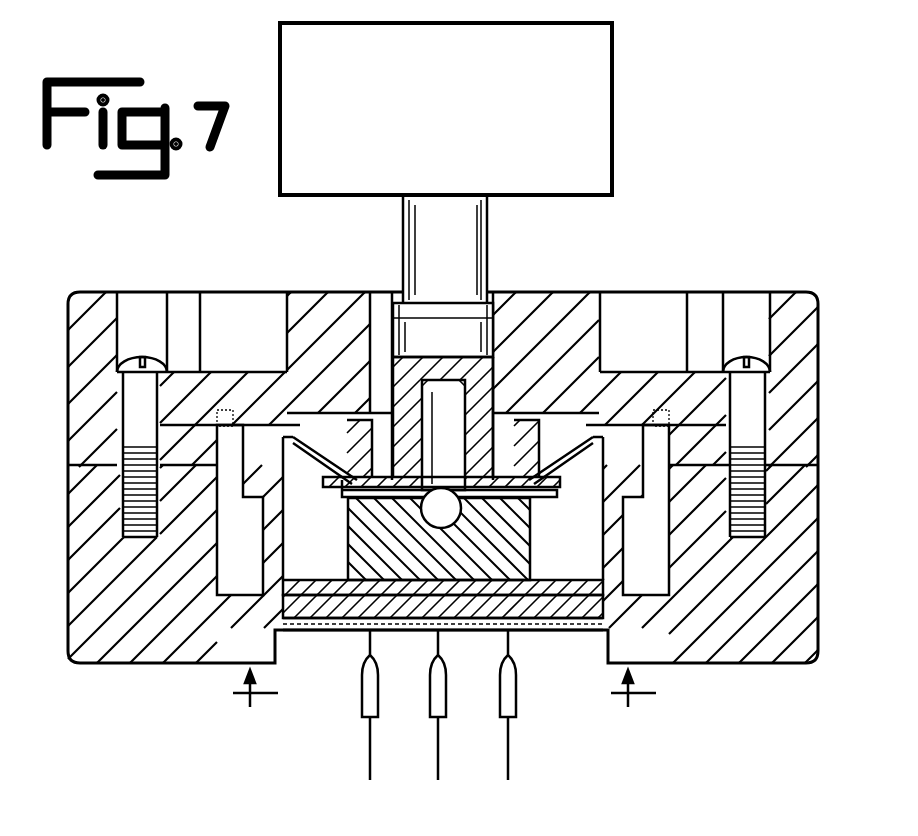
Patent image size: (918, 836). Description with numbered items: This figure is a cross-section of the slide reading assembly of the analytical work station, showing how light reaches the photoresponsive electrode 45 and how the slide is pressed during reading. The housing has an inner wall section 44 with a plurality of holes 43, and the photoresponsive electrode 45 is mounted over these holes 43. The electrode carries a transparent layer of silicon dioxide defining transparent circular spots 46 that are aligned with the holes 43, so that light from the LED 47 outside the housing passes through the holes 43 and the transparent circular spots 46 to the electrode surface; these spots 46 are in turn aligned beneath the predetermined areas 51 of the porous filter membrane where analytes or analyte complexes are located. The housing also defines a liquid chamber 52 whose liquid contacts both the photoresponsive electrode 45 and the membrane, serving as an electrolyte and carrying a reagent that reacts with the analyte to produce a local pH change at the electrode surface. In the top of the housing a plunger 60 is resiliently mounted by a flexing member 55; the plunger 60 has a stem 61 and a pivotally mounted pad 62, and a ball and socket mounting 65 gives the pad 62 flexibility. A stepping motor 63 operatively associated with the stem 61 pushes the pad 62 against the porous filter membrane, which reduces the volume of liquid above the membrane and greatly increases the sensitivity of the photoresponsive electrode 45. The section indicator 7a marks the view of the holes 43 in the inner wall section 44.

The stepping motor 63 is at (610, 135).
The plunger 60 is at (478, 332).
The stem 61 is at (392, 400).
The flexing member 55 is at (550, 430).
The liquid chamber 52 is at (333, 573).
The ball and socket mounting 65 is at (424, 512).
The pivotally mounted pad 62 is at (522, 542).
The predetermined areas in the porous filter membrane 51 is at (372, 634).
The transparent circular spots 46 is at (345, 632).
The holes 43 is at (360, 632).
The LED 47 is at (382, 707).
The photoresponsive electrode 45 is at (530, 632).
The inner wall section 44 is at (163, 662).
The section line 7a is at (453, 706).